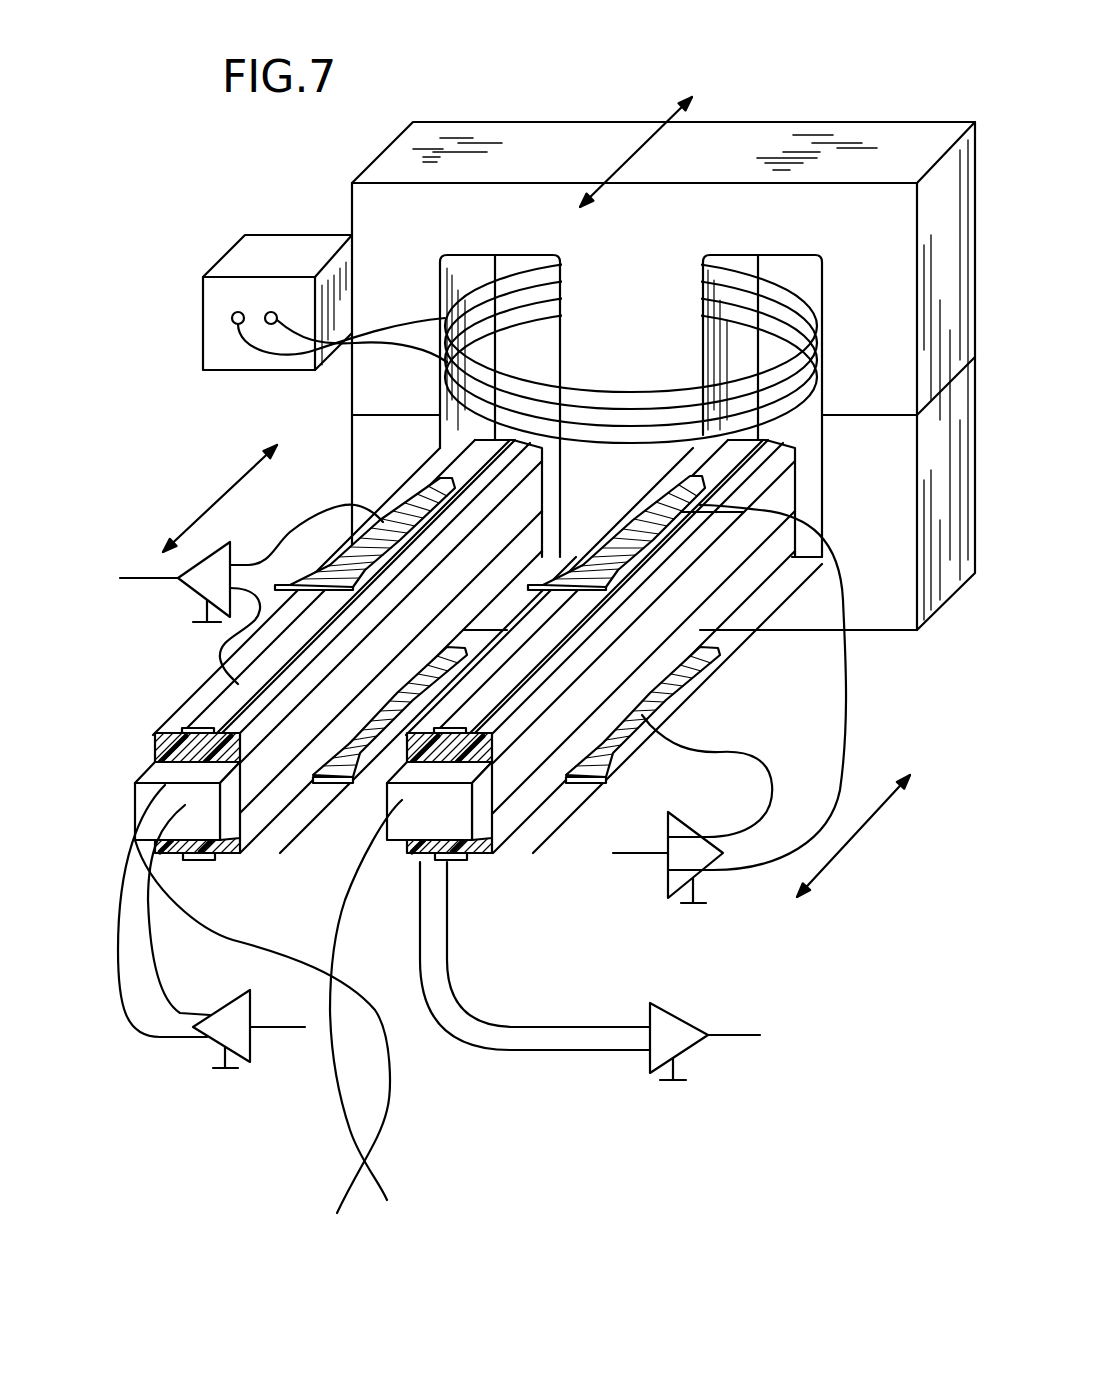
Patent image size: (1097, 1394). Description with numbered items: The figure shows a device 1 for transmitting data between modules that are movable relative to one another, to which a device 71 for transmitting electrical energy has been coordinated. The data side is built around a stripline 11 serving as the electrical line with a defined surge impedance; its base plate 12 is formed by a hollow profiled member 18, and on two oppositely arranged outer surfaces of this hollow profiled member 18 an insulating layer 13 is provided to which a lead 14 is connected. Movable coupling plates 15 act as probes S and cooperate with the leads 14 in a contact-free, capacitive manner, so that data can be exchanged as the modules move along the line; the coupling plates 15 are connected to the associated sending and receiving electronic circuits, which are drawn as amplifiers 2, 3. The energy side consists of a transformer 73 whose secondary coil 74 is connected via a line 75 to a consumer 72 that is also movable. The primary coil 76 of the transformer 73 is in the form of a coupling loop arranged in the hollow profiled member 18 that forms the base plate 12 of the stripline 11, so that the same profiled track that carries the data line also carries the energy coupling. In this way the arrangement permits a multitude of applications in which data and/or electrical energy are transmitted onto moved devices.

The device for transmitting data 1 is at (250, 442).
The reproducing amplifier 2 is at (193, 588).
The recording amplifier 3 is at (215, 1045).
The stripline 11 is at (257, 778).
The base plate 12 is at (130, 810).
The insulating layer 13 is at (158, 733).
The electrical lead 14 is at (218, 703).
The coupling plate 15 is at (410, 493).
The hollow profiled member 18 is at (205, 810).
The device for transmitting electrical energy 71 is at (770, 95).
The consumer 72 is at (308, 235).
The transformer 73 is at (903, 122).
The secondary coil 74 is at (765, 280).
The line 75 is at (382, 330).
The primary coil 76 is at (340, 930).
The probe S is at (397, 497).